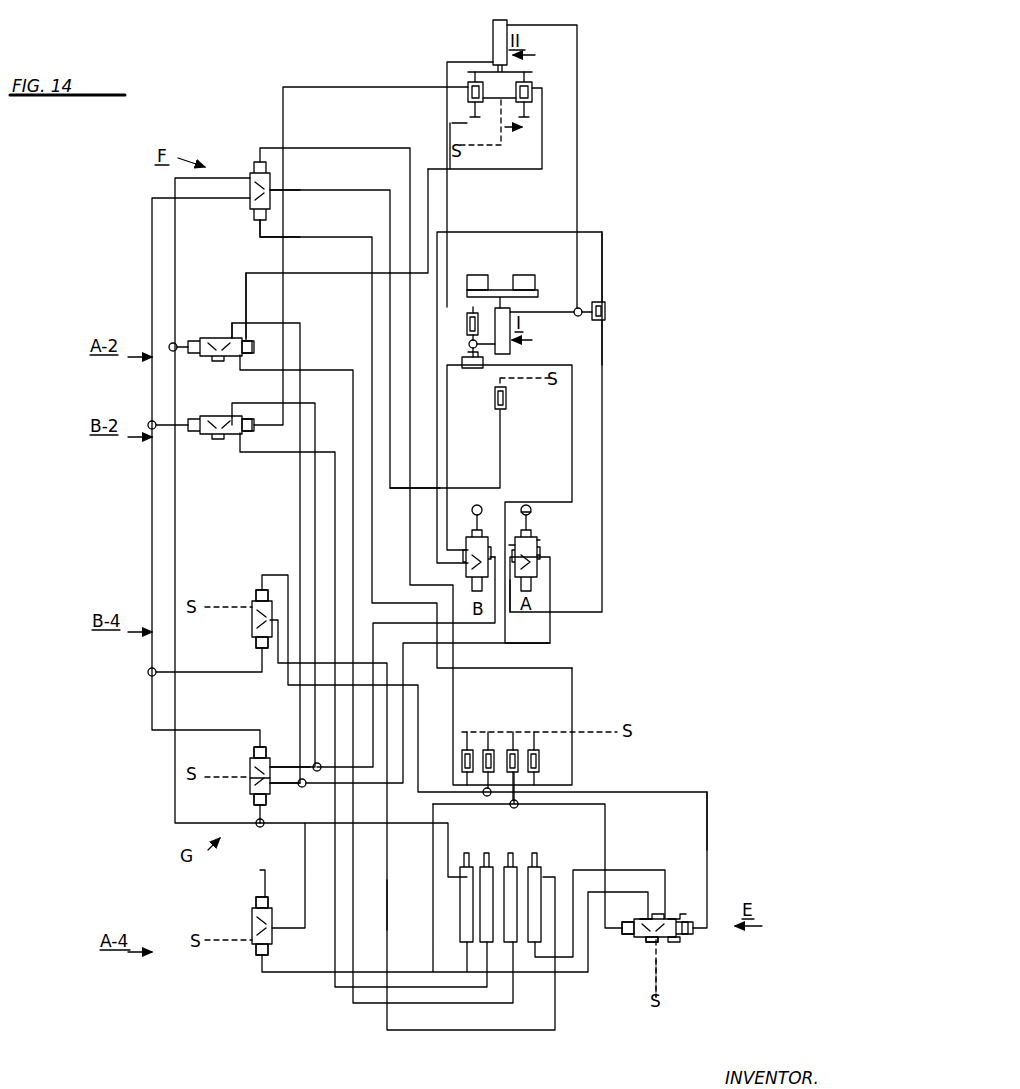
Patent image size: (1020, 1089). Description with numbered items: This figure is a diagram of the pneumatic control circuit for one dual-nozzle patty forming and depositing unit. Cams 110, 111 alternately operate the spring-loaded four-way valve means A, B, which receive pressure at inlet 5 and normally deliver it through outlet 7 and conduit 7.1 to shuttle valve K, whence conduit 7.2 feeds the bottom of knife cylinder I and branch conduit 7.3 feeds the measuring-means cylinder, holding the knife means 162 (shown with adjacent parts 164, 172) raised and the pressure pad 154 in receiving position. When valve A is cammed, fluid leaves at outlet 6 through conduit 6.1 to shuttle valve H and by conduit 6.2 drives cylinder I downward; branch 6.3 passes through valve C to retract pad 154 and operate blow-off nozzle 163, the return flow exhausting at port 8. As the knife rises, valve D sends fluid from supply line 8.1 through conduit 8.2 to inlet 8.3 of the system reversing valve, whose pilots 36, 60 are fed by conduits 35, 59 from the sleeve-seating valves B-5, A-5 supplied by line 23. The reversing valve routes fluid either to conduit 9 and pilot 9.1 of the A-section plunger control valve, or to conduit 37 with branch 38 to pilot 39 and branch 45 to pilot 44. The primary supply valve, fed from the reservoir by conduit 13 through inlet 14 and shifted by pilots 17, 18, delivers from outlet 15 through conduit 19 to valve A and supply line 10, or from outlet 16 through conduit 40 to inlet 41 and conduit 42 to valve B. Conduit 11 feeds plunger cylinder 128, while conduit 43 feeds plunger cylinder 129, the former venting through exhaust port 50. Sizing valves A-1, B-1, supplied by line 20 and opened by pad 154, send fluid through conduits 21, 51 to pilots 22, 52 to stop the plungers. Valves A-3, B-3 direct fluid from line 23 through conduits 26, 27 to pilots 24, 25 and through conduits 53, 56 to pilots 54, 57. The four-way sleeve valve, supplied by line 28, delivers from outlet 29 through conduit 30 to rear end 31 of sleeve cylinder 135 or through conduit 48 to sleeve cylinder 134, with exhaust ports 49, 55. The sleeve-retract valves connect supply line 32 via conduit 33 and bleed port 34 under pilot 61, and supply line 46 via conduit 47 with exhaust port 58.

The pilot 36 is at (254, 160).
The conduit 35 is at (344, 148).
The conduit 51 is at (342, 88).
The conduit 59 is at (330, 237).
The conduit 8.2 is at (338, 190).
The inlet 8.3 is at (275, 186).
The pilot 60 is at (262, 233).
The conduit 9 is at (175, 262).
The conduit 37 is at (152, 252).
The pilot 9.1 is at (180, 352).
The branch 38 is at (152, 432).
The exhaust port 50 is at (208, 338).
The pilot 22 is at (250, 350).
The conduit 21 is at (310, 273).
The branch fluid pressure supply line 10 is at (300, 338).
The conduit 19 is at (320, 786).
The conduit 11 is at (244, 370).
The conduit 40 is at (315, 420).
The pilot 39 is at (204, 418).
The inlet 41 is at (228, 416).
The pilot 52 is at (252, 431).
The conduit 43 is at (252, 452).
The conduit 47 is at (260, 576).
The conduit 56 is at (288, 580).
The conduit 53 is at (645, 798).
The exhaust port 58 is at (252, 632).
The pilot 57 is at (256, 592).
The fluid pressure supply line 46 is at (250, 608).
The pilot 44 is at (256, 650).
The branch conduit 45 is at (204, 672).
The conduit 13 is at (222, 775).
The inlet 14 is at (250, 783).
The delivery outlet 15 is at (270, 788).
The delivery outlet 16 is at (270, 770).
The pilot 17 is at (254, 805).
The pilot 18 is at (267, 755).
The conduit 33 is at (456, 835).
The valve port 34 is at (252, 920).
The pilot 61 is at (256, 897).
The supply line 32 is at (220, 942).
The pilot 24 is at (268, 956).
The conduit 26 is at (306, 975).
The conduit 27 is at (605, 843).
The conduit 48 is at (650, 870).
The conduit 30 is at (622, 896).
The outlet 29 is at (644, 918).
The pilot 25 is at (628, 936).
The exhaust port 55 is at (648, 942).
The exhaust port 49 is at (670, 942).
The pilot 54 is at (690, 936).
The supply line 28 is at (662, 970).
The rear end 31 is at (466, 945).
The plunger cylinder 129 is at (492, 878).
The plunger cylinder 128 is at (512, 878).
The sleeve cylinder 134 is at (535, 875).
The sleeve cylinder 135 is at (424, 914).
The branch conduit 7.3 is at (577, 113).
The branch conduit 6.3 is at (484, 66).
The supply line 20 is at (484, 144).
The control valve B-1 is at (462, 80).
The control valve A-1 is at (534, 80).
The pressure pad 154 is at (470, 112).
The blow-off nozzle 163 is at (452, 124).
The knife means 162 is at (520, 276).
The stop block 164 is at (536, 287).
The cross bar 172 is at (500, 300).
The knife-means cylinder I is at (502, 331).
The valve C is at (464, 326).
The conduit 6.2 is at (466, 345).
The shuttle valve H is at (462, 368).
The control valve D is at (494, 398).
The supply line 8.1 is at (524, 380).
The conduit 7.2 is at (547, 322).
The shuttle valve K is at (605, 310).
The conduit 7.1 is at (602, 388).
The conduit 6.1 is at (572, 480).
The cam 111 is at (478, 504).
The valve means B is at (479, 548).
The valve means A is at (526, 548).
The outlet 6 is at (512, 542).
The cam 110 is at (541, 515).
The exhaust port 8 is at (542, 540).
The inlet 5 is at (538, 556).
The outlet 7 is at (510, 590).
The conduit 42 is at (373, 790).
The supply line 23 is at (592, 732).
The control valve B-5 is at (462, 744).
The control valve B-3 is at (494, 744).
The control valve A-3 is at (520, 744).
The control valve A-5 is at (564, 766).